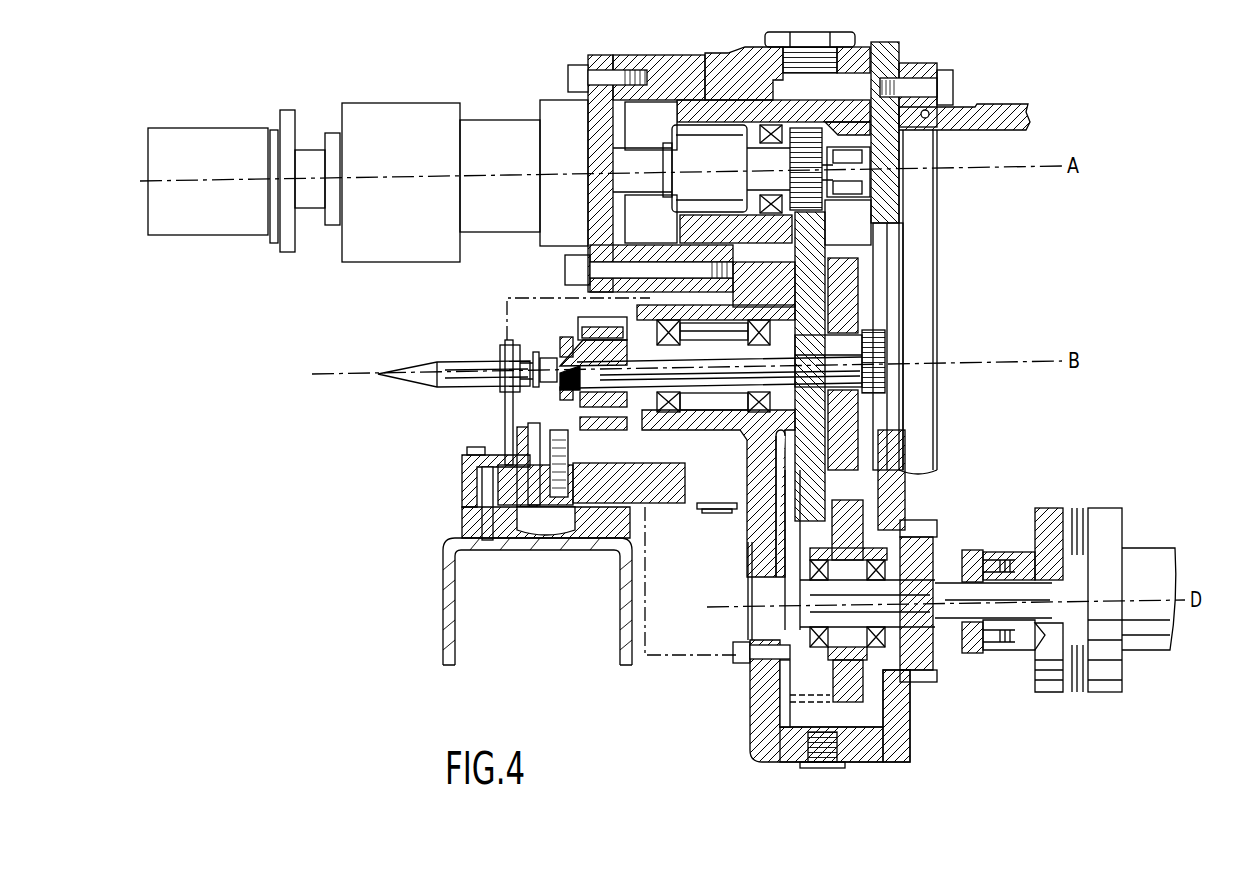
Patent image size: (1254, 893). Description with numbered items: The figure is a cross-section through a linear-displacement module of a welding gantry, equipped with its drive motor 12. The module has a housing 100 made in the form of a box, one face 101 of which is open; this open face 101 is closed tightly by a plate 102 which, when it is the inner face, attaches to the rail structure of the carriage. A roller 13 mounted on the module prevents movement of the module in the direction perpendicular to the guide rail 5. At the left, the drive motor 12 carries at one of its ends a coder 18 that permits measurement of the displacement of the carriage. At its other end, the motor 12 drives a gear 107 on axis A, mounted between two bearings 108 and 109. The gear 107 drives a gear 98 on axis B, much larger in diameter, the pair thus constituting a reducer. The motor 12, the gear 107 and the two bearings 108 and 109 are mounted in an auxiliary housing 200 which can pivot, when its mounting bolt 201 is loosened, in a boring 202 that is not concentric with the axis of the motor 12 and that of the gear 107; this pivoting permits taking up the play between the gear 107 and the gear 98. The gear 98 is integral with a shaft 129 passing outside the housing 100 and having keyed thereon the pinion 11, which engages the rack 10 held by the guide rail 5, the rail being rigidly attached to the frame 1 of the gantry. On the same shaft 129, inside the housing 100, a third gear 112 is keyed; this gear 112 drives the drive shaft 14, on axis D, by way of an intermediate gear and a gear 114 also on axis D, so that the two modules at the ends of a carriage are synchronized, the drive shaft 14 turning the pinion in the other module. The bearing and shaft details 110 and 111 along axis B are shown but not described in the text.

The coder 18 is at (217, 167).
The drive motor 12 is at (410, 223).
The auxiliary housing 200 is at (575, 247).
The mounting bolt 201 is at (575, 275).
The gear 107 is at (836, 104).
The bearing 109 is at (795, 130).
The bearing 108 is at (840, 147).
The boring 202 is at (814, 250).
The gear 98 is at (820, 250).
The third gear 112 is at (857, 266).
The spindle shaft 110 is at (664, 345).
The bearing sleeve 111 is at (758, 344).
The shaft 129 is at (875, 397).
The pinion 11 is at (580, 330).
The rack 10 is at (519, 432).
The guide rail 5 is at (460, 478).
The fixed structure 1 is at (467, 517).
The roller 13 is at (697, 490).
The housing 100 is at (763, 720).
The plate 102 is at (900, 711).
The open face 101 is at (887, 728).
The gear 114 is at (852, 518).
The drive shaft 14 is at (1145, 552).